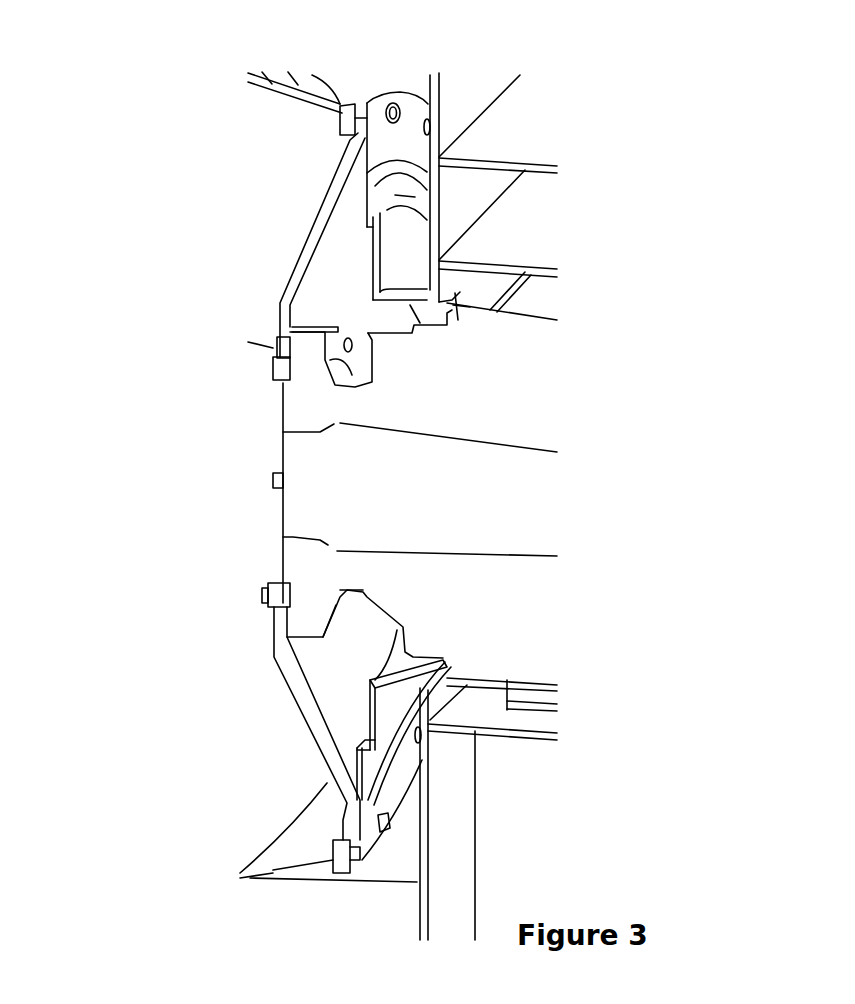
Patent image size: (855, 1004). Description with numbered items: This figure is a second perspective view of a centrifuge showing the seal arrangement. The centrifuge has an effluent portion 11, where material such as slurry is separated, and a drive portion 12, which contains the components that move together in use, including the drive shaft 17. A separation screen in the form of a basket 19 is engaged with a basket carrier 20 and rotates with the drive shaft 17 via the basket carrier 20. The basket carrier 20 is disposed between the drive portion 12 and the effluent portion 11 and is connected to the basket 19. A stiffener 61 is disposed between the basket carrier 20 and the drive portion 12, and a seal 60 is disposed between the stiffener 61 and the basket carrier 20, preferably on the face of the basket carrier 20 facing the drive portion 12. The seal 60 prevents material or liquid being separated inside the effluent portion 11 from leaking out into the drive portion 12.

The effluent portion 11 is at (248, 467).
The drive portion 12 is at (617, 363).
The drive shaft 17 is at (512, 498).
The basket 19 is at (336, 95).
The basket carrier 20 is at (307, 723).
The seal 60 is at (363, 767).
The stiffener 61 is at (373, 710).